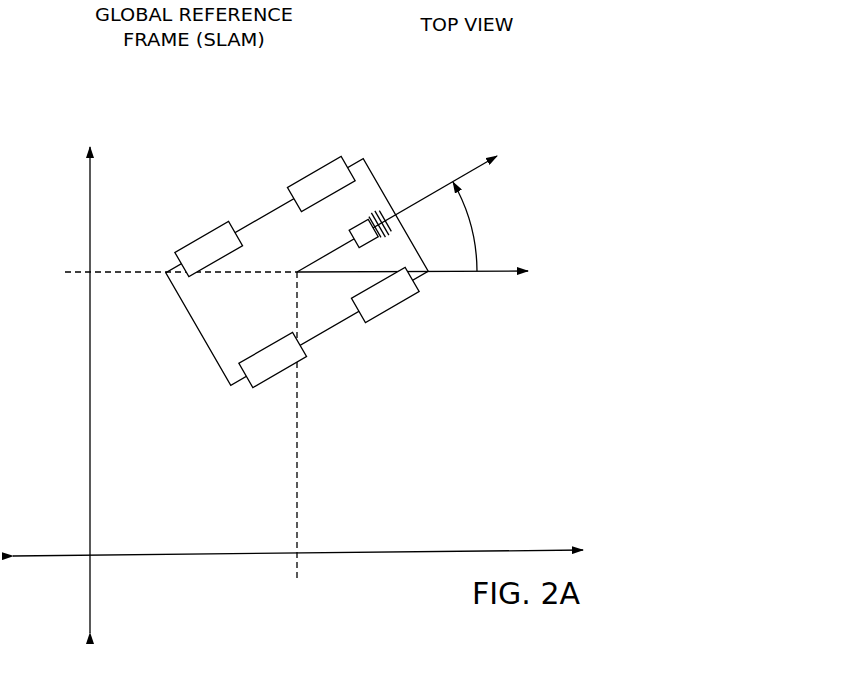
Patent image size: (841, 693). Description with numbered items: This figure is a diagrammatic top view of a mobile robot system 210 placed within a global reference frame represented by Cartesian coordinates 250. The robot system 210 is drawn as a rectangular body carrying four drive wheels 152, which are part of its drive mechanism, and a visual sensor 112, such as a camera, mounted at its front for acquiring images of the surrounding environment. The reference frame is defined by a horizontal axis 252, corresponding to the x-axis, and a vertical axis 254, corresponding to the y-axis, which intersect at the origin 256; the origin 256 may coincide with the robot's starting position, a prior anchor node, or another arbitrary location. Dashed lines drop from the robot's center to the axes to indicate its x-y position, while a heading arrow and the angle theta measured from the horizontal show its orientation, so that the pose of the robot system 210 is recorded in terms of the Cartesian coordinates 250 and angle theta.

The visual sensor 112 is at (381, 195).
The drive wheel 152 is at (403, 300).
The robot system 210 is at (320, 328).
The Cartesian coordinates 250 is at (288, 286).
The horizontal axis 252 is at (340, 555).
The vertical axis 254 is at (92, 477).
The origin 256 is at (102, 572).